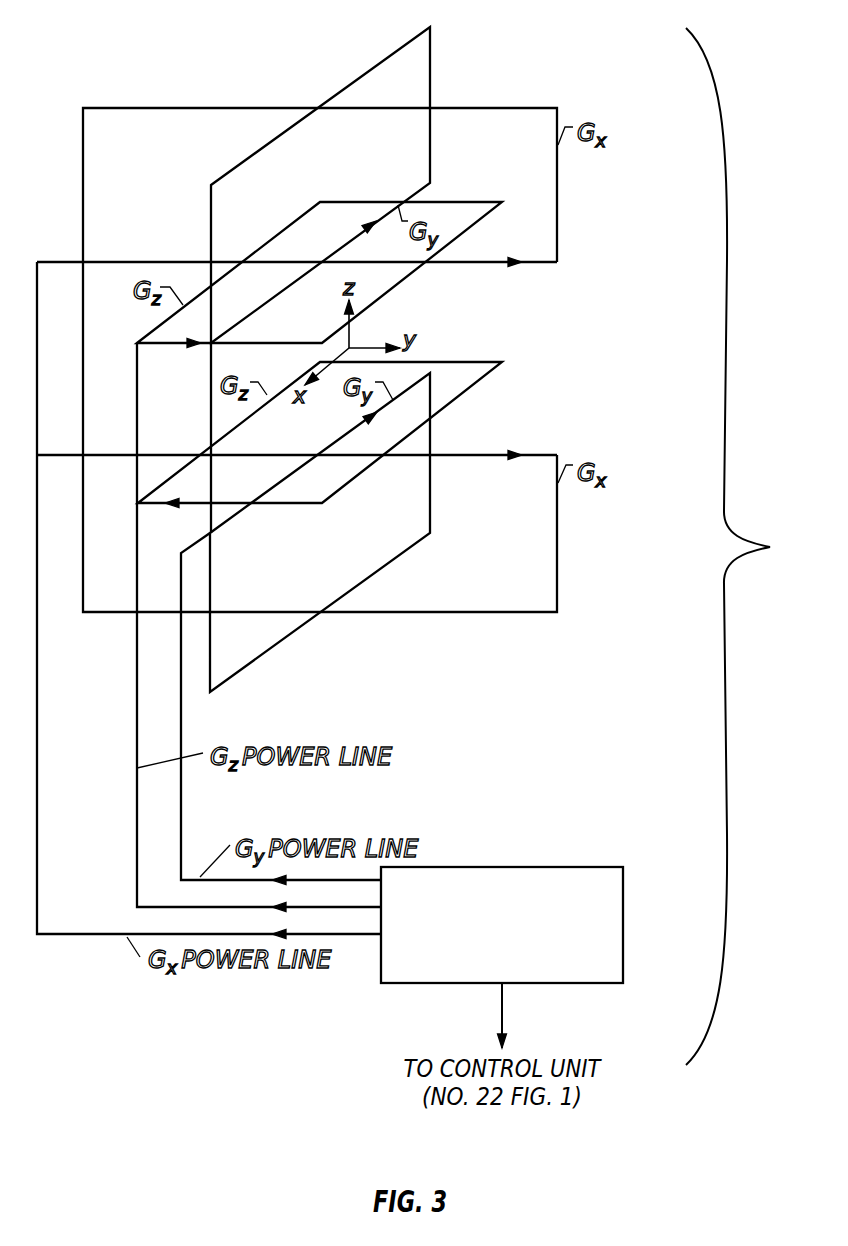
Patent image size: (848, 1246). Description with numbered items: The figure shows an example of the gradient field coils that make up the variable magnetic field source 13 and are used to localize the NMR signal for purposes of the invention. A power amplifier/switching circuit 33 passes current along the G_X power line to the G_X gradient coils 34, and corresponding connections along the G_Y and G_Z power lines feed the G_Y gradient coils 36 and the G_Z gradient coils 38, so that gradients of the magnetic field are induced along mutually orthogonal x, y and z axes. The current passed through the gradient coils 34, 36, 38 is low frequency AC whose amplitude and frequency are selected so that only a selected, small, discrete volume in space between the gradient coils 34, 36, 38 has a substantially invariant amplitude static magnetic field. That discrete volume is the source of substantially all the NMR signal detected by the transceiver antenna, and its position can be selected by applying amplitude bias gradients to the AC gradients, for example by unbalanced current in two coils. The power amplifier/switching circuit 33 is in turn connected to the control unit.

The variable magnetic field source 13 is at (745, 546).
The power amplifier/switching circuit 33 is at (502, 946).
The G_X gradient coils 34 is at (319, 346).
The G_Y gradient coils 36 is at (343, 359).
The G_Z gradient coils 38 is at (319, 355).